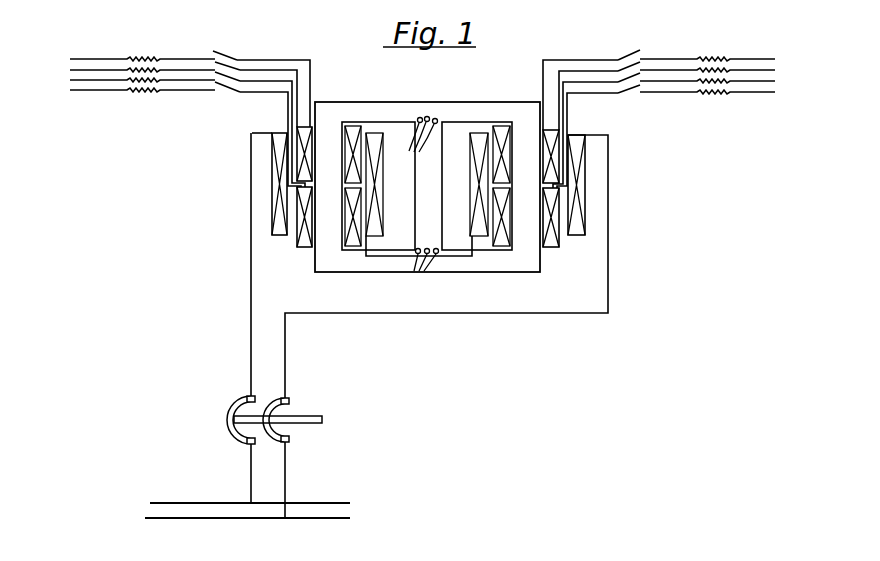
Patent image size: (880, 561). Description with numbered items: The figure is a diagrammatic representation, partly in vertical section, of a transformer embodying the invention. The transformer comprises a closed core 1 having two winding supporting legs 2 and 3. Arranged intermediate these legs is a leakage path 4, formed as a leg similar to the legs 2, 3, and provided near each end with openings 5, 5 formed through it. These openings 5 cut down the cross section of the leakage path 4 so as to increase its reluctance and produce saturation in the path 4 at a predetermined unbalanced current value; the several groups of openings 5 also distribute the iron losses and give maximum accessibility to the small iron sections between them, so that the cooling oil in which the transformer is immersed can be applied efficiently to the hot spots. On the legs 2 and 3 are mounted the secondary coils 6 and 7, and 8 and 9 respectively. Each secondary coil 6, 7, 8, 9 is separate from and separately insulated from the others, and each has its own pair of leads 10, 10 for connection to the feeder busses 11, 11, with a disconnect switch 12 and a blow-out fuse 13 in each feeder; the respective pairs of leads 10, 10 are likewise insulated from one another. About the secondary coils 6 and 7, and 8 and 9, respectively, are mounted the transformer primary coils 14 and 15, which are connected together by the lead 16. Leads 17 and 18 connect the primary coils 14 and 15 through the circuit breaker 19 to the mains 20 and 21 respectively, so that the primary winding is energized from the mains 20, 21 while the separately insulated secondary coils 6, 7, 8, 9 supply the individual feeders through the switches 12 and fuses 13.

The closed core 1 is at (487, 105).
The winding supporting leg 2 is at (313, 265).
The winding supporting leg 3 is at (531, 243).
The leakage path 4 is at (433, 222).
The openings 5 is at (409, 152).
The secondary coil 6 is at (303, 124).
The secondary coil 7 is at (300, 244).
The secondary coil 8 is at (566, 124).
The secondary coil 9 is at (553, 245).
The leads 10 is at (297, 84).
The feeder busses 11 is at (95, 77).
The disconnect switch 12 is at (233, 57).
The blow-out fuse 13 is at (157, 70).
The primary coil 14 is at (273, 200).
The primary coil 15 is at (578, 229).
The lead 16 is at (373, 265).
The lead 17 is at (248, 348).
The lead 18 is at (608, 287).
The circuit breaker 19 is at (295, 417).
The main 20 is at (307, 502).
The main 21 is at (327, 520).